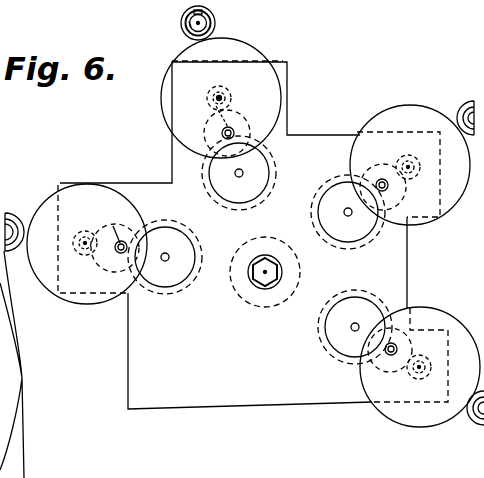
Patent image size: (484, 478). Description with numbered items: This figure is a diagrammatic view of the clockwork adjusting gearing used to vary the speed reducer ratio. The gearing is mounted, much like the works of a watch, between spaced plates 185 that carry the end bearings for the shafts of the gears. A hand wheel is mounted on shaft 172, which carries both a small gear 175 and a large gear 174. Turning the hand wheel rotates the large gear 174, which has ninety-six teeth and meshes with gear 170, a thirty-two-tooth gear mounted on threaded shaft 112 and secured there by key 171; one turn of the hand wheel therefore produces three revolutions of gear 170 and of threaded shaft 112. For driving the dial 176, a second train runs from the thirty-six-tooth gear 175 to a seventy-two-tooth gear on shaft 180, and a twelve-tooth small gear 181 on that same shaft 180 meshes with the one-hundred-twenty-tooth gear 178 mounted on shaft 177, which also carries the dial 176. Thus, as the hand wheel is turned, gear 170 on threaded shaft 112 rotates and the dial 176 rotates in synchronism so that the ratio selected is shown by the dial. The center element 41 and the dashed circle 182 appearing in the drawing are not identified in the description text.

The center post 41 is at (290, 270).
The threaded shaft 112 is at (187, 26).
The gear 170 is at (218, 19).
The key 171 is at (184, 19).
The shaft 172 is at (226, 92).
The large gear 174 is at (257, 50).
The small gear 175 is at (232, 98).
The dial 176 is at (363, 307).
The shaft 177 is at (243, 171).
The gear 178 is at (281, 168).
The shaft 180 is at (216, 106).
The small gear 181 is at (218, 134).
The path circle 182 is at (242, 114).
The plates 185 is at (312, 133).